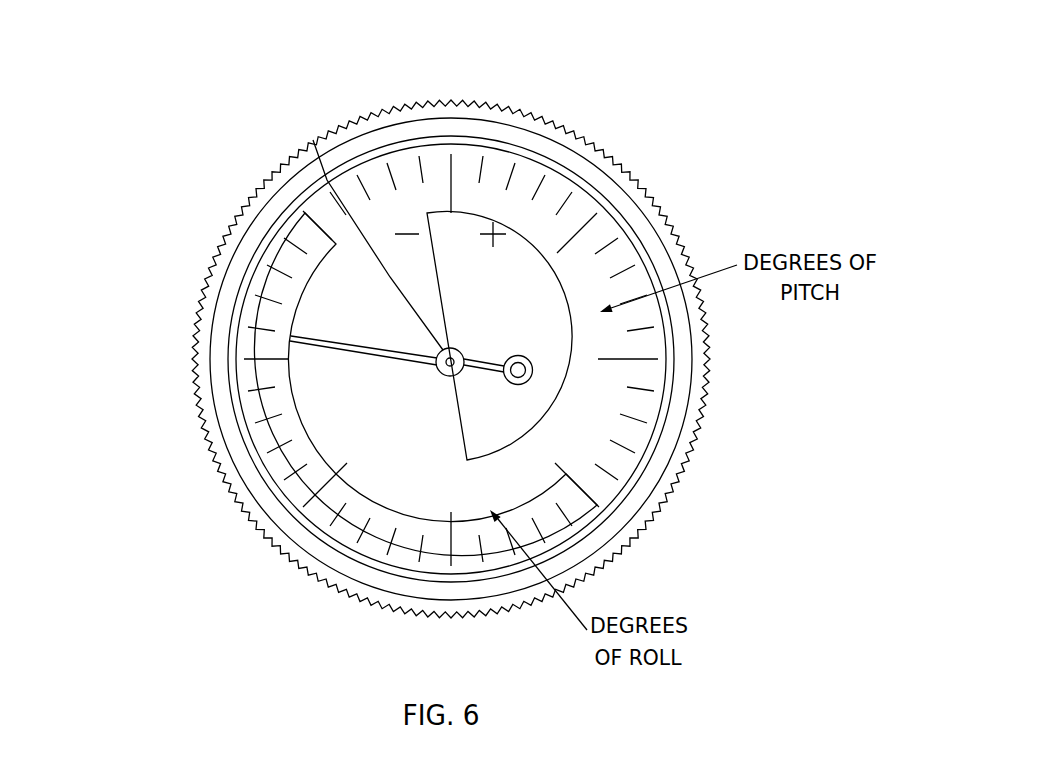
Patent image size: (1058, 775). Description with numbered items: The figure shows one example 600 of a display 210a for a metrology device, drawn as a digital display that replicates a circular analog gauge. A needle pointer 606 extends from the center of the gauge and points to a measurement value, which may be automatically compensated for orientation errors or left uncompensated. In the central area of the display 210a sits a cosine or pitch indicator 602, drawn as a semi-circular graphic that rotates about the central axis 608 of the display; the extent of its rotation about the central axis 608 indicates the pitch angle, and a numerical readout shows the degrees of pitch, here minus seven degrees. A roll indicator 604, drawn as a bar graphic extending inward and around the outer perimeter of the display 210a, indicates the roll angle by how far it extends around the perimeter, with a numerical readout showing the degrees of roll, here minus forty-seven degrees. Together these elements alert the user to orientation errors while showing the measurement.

The example of a display 600 is at (293, 77).
The display 210a is at (462, 162).
The cosine or pitch indicator 602 is at (505, 270).
The roll indicator 604 is at (270, 405).
The needle pointer 606 is at (290, 338).
The central axis 608 is at (313, 140).